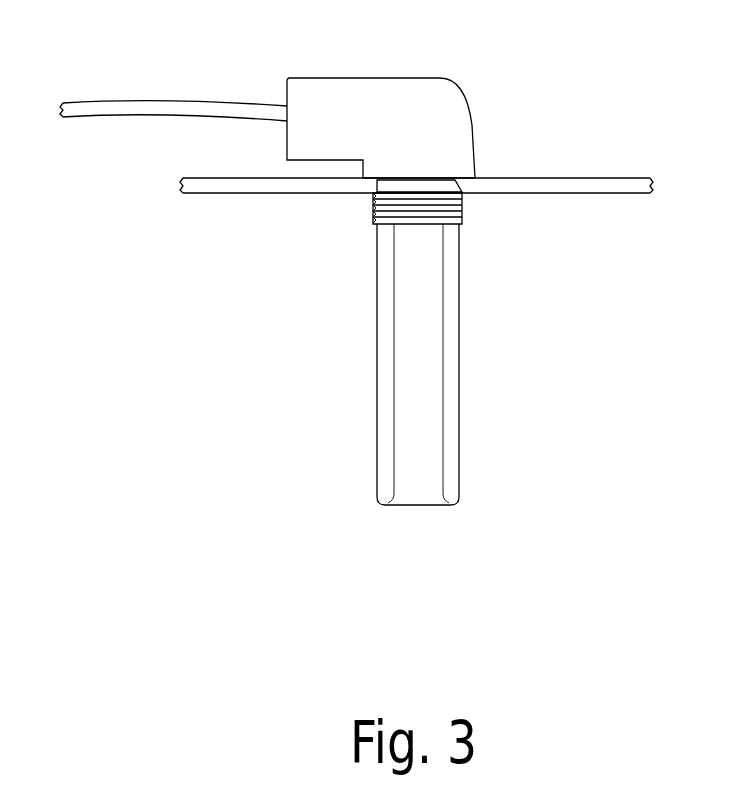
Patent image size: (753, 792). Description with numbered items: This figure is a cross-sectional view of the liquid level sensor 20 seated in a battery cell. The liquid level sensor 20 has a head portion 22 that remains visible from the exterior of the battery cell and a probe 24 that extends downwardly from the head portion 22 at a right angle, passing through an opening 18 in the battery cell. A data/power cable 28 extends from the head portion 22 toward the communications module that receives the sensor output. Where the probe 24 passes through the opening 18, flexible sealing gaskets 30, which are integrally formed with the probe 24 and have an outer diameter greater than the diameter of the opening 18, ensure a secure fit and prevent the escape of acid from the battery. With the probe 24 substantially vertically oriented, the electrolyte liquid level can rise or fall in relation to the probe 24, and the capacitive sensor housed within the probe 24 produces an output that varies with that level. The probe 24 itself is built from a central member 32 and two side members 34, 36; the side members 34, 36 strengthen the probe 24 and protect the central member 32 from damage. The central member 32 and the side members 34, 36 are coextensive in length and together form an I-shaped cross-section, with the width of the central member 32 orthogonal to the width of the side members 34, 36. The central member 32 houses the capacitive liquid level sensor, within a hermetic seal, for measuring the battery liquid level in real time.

The opening 18 is at (460, 192).
The liquid level sensor 20 is at (493, 97).
The head portion 22 is at (358, 93).
The probe 24 is at (422, 364).
The data/power cable 28 is at (160, 102).
The flexible sealing gaskets 30 is at (462, 198).
The central member 32 is at (426, 430).
The side member 34 is at (386, 364).
The side member 36 is at (452, 355).